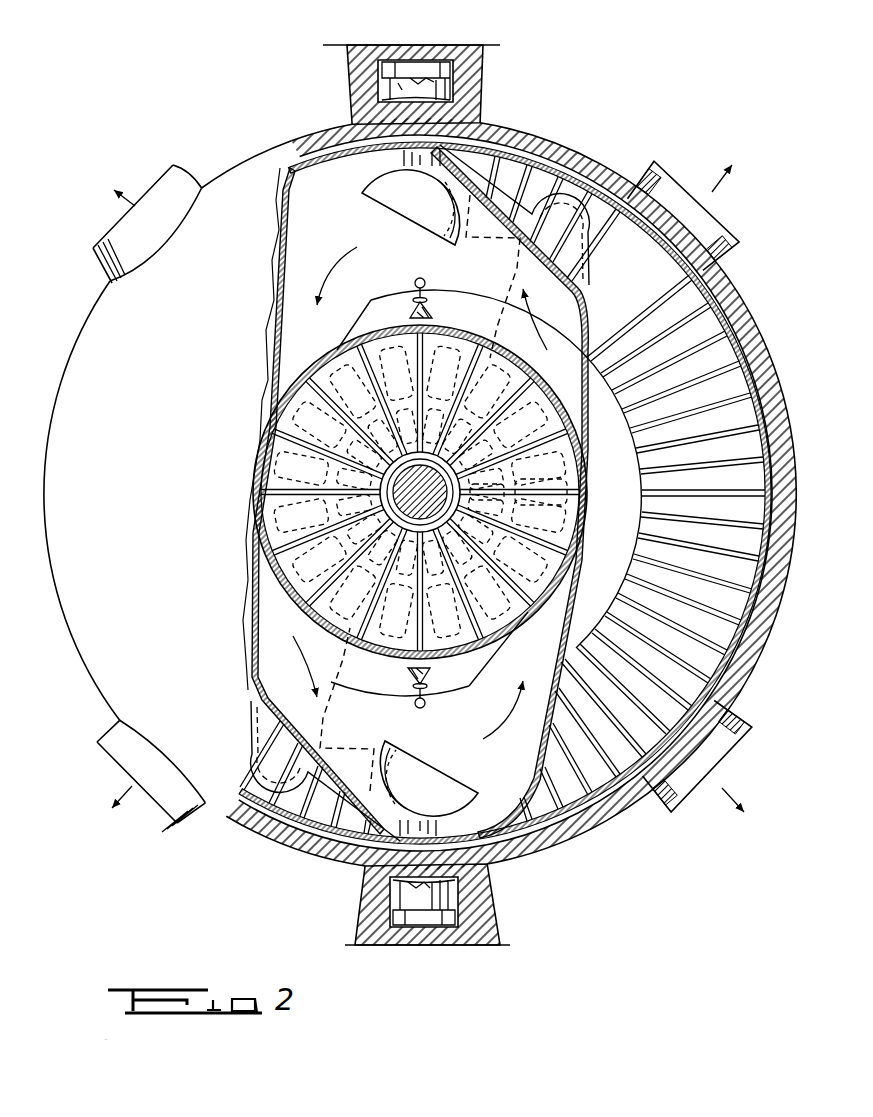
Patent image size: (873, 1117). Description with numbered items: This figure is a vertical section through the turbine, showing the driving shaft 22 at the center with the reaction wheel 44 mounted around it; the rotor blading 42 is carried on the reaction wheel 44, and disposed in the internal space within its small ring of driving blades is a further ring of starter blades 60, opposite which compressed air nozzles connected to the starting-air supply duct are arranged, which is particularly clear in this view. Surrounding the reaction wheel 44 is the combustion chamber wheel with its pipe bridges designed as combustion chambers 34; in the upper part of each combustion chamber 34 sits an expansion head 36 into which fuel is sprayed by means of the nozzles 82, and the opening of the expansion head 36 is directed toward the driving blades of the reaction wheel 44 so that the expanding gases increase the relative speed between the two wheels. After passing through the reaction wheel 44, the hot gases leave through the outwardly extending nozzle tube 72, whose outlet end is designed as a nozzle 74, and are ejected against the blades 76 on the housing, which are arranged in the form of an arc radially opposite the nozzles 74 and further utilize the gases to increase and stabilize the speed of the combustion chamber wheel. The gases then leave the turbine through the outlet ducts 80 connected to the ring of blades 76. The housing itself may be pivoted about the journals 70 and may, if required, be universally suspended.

The driving shaft 22 is at (431, 500).
The combustion chamber 34 is at (575, 552).
The expansion head 36 is at (430, 204).
The rotor blading 42 is at (544, 480).
The reaction wheel 44 is at (527, 385).
The ring of blades 60 is at (520, 523).
The journals 70 is at (393, 82).
The nozzle tube 72 is at (565, 232).
The nozzle 74 is at (494, 232).
The blades 76 is at (706, 336).
The outlet duct 80 is at (170, 793).
The nozzles 82 is at (428, 317).